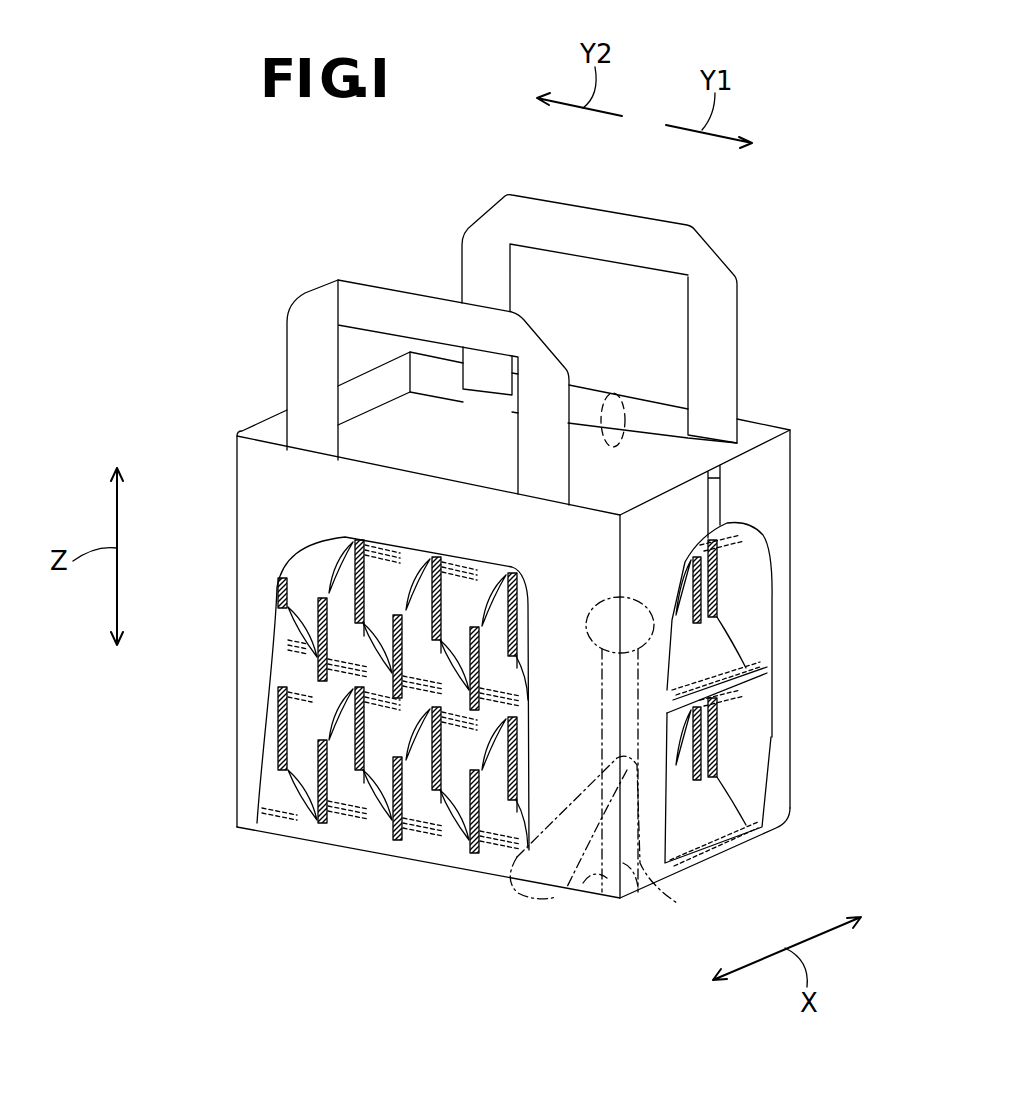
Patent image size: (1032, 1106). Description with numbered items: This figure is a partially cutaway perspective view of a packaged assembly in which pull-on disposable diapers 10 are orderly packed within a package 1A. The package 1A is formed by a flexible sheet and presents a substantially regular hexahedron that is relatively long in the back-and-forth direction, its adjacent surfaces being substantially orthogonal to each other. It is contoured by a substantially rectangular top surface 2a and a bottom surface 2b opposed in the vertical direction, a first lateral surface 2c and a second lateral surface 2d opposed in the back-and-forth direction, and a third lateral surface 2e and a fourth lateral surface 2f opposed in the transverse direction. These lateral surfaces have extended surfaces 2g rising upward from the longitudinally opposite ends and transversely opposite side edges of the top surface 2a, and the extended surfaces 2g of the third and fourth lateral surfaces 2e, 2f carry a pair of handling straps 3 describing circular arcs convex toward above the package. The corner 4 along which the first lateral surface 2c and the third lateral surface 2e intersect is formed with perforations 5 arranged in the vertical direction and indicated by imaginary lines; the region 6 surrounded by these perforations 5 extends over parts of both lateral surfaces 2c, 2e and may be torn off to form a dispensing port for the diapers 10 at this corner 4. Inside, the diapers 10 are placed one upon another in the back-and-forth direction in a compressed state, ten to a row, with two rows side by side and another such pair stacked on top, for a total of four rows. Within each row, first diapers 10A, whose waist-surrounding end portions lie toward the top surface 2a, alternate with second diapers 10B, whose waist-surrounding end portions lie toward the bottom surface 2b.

The package 1A is at (801, 407).
The top surface 2a is at (653, 453).
The bottom surface 2b is at (712, 847).
The first lateral surface 2c is at (780, 673).
The second lateral surface 2d is at (262, 492).
The third lateral surface 2e is at (243, 585).
The fourth lateral surface 2f is at (618, 385).
The extended surfaces 2g is at (263, 427).
The handling straps 3 is at (367, 295).
The corner 4 is at (655, 882).
The perforations 5 is at (588, 880).
The region 6 is at (597, 628).
The pull-on disposable diapers 10 is at (385, 537).
The first diapers 10A is at (373, 820).
The second diapers 10B is at (350, 813).